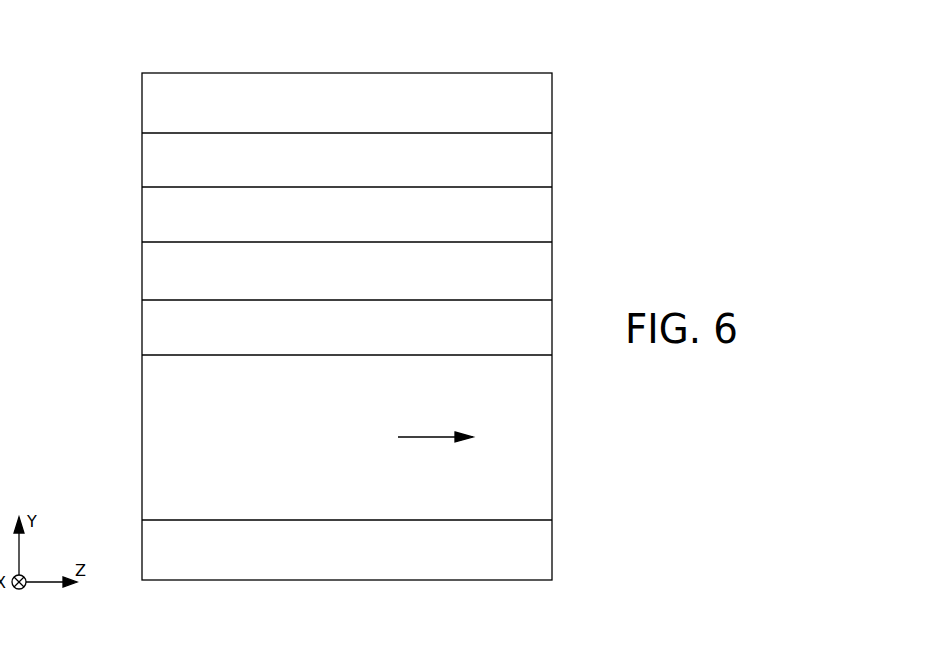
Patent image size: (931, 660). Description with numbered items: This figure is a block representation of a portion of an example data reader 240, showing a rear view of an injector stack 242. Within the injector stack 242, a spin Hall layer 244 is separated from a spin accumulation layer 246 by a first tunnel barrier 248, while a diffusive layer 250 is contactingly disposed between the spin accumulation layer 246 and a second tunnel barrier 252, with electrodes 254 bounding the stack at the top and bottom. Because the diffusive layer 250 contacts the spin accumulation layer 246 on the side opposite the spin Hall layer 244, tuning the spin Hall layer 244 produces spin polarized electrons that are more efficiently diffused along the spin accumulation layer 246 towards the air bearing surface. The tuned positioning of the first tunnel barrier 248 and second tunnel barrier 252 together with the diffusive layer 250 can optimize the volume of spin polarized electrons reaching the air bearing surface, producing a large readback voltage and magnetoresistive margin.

The data reader 240 is at (613, 45).
The injector stack 242 is at (130, 65).
The spin Hall layer 244 is at (539, 447).
The spin accumulation layer 246 is at (539, 281).
The first tunnel barrier 248 is at (539, 337).
The diffusive layer 250 is at (539, 224).
The second tunnel barrier 252 is at (539, 169).
The electrode 254 is at (539, 113).